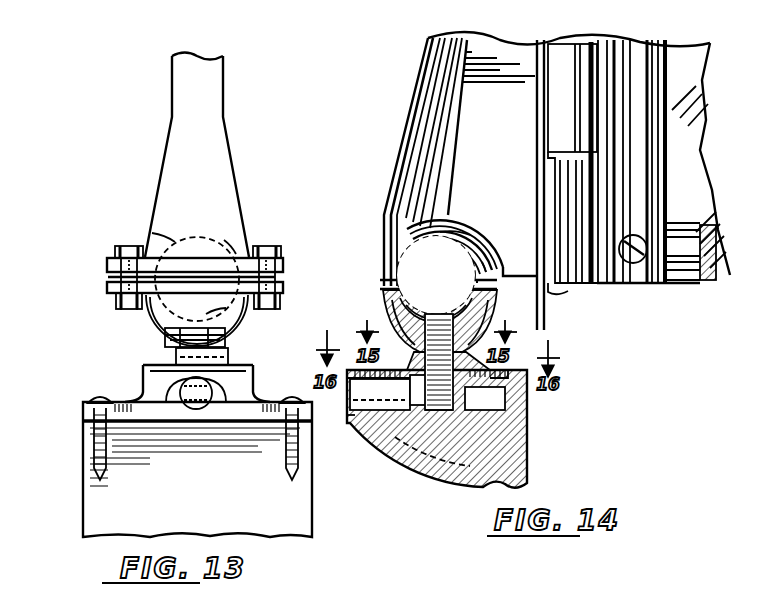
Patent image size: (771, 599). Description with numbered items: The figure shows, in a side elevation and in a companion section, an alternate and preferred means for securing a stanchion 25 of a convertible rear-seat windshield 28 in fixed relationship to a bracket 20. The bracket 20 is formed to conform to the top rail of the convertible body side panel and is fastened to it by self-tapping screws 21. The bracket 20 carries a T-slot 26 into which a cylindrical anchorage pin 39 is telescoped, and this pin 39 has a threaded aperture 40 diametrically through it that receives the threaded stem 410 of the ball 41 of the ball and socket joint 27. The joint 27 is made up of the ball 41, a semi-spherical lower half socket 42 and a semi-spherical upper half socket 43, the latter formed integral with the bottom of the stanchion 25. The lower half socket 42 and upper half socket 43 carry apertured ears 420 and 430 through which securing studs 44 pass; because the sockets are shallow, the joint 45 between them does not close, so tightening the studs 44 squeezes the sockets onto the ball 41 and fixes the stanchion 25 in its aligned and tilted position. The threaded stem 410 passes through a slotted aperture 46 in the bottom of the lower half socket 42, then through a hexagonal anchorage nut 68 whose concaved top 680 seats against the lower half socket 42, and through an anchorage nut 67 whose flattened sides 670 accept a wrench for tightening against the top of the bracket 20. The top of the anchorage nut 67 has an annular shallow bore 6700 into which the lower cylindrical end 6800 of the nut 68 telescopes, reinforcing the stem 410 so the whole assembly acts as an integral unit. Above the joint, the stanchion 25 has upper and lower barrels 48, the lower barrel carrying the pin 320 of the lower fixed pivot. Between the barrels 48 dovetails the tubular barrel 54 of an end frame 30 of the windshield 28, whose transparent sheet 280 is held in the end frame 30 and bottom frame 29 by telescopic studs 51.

In FIG. 13, the bracket 20 is at (88, 496).
In FIG. 14, the bracket 20 is at (518, 444).
In FIG. 13, the self-tapping screw 21 is at (96, 399).
In FIG. 13, the stanchion 25 is at (218, 147).
In FIG. 14, the stanchion 25 is at (425, 75).
In FIG. 14, the T-slot 26 is at (364, 421).
In FIG. 13, the ball and socket joint 27 is at (162, 236).
In FIG. 14, the ball and socket joint 27 is at (455, 238).
In FIG. 14, the windshield 28 is at (680, 276).
In FIG. 14, the bottom frame 29 is at (672, 278).
In FIG. 14, the end frame 30 is at (656, 182).
In FIG. 13, the cylindrical anchorage pin 39 is at (180, 394).
In FIG. 14, the cylindrical anchorage pin 39 is at (398, 417).
In FIG. 13, the threaded aperture 40 is at (212, 396).
In FIG. 14, the threaded aperture 40 is at (437, 392).
In FIG. 13, the ball 41 is at (220, 238).
In FIG. 14, the ball 41 is at (470, 318).
In FIG. 13, the lower half socket 42 is at (150, 300).
In FIG. 14, the lower half socket 42 is at (390, 296).
In FIG. 13, the upper half socket 43 is at (238, 240).
In FIG. 14, the upper half socket 43 is at (486, 262).
In FIG. 13, the securing stud 44 is at (118, 250).
In FIG. 13, the joint 45 is at (118, 276).
In FIG. 14, the joint 45 is at (386, 284).
In FIG. 13, the slotted aperture 46 is at (168, 333).
In FIG. 14, the slotted aperture 46 is at (478, 330).
In FIG. 14, the barrel 48 is at (565, 182).
In FIG. 14, the telescopic stud 51 is at (636, 264).
In FIG. 14, the tubular barrel 54 is at (560, 95).
In FIG. 13, the anchorage nut 67 is at (230, 360).
In FIG. 14, the anchorage nut 67 is at (504, 376).
In FIG. 13, the hexagonal anchorage nut 68 is at (226, 312).
In FIG. 14, the hexagonal anchorage nut 68 is at (420, 350).
In FIG. 14, the transparent sheet 280 is at (690, 68).
In FIG. 14, the pin 320 is at (570, 290).
In FIG. 13, the threaded stem 410 is at (250, 370).
In FIG. 14, the threaded stem 410 is at (417, 433).
In FIG. 13, the apertured ear 420 is at (109, 287).
In FIG. 13, the apertured ear 430 is at (109, 260).
In FIG. 13, the flattened side 670 is at (228, 340).
In FIG. 14, the flattened side 670 is at (485, 398).
In FIG. 13, the concaved top 680 is at (175, 345).
In FIG. 14, the annular shallow bore 6700 is at (380, 394).
In FIG. 14, the lower cylindrical end 6800 is at (404, 320).